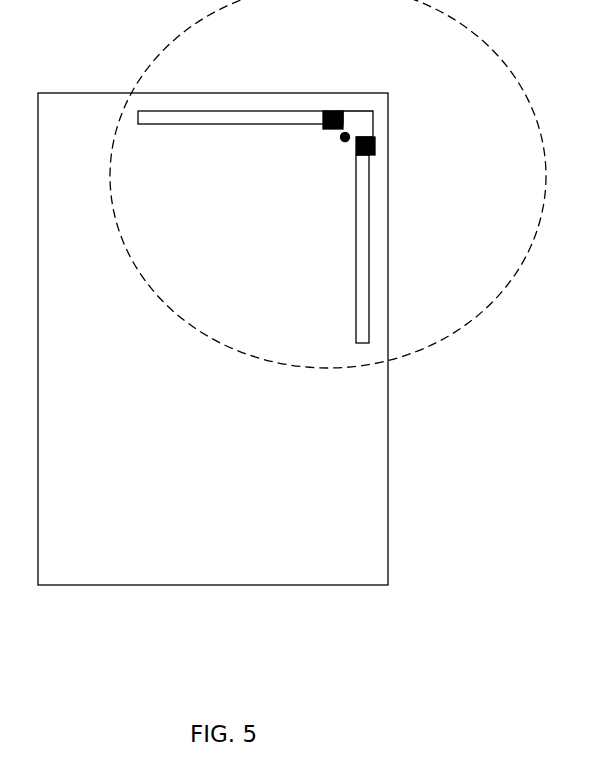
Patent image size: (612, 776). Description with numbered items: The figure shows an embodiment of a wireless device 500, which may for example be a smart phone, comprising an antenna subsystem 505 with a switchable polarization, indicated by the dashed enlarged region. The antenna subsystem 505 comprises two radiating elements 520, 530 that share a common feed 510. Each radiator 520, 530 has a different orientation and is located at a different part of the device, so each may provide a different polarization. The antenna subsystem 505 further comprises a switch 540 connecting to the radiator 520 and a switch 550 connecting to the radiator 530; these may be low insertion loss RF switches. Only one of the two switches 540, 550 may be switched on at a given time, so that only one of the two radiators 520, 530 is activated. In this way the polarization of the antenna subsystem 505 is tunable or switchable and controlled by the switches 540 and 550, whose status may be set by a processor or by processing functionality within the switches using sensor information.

The wireless device 500 is at (388, 510).
The antenna subsystem 505 is at (494, 300).
The common feed 510 is at (340, 144).
The radiating element 520 is at (231, 110).
The radiating element 530 is at (371, 249).
The switch 540 is at (333, 110).
The switch 550 is at (378, 147).